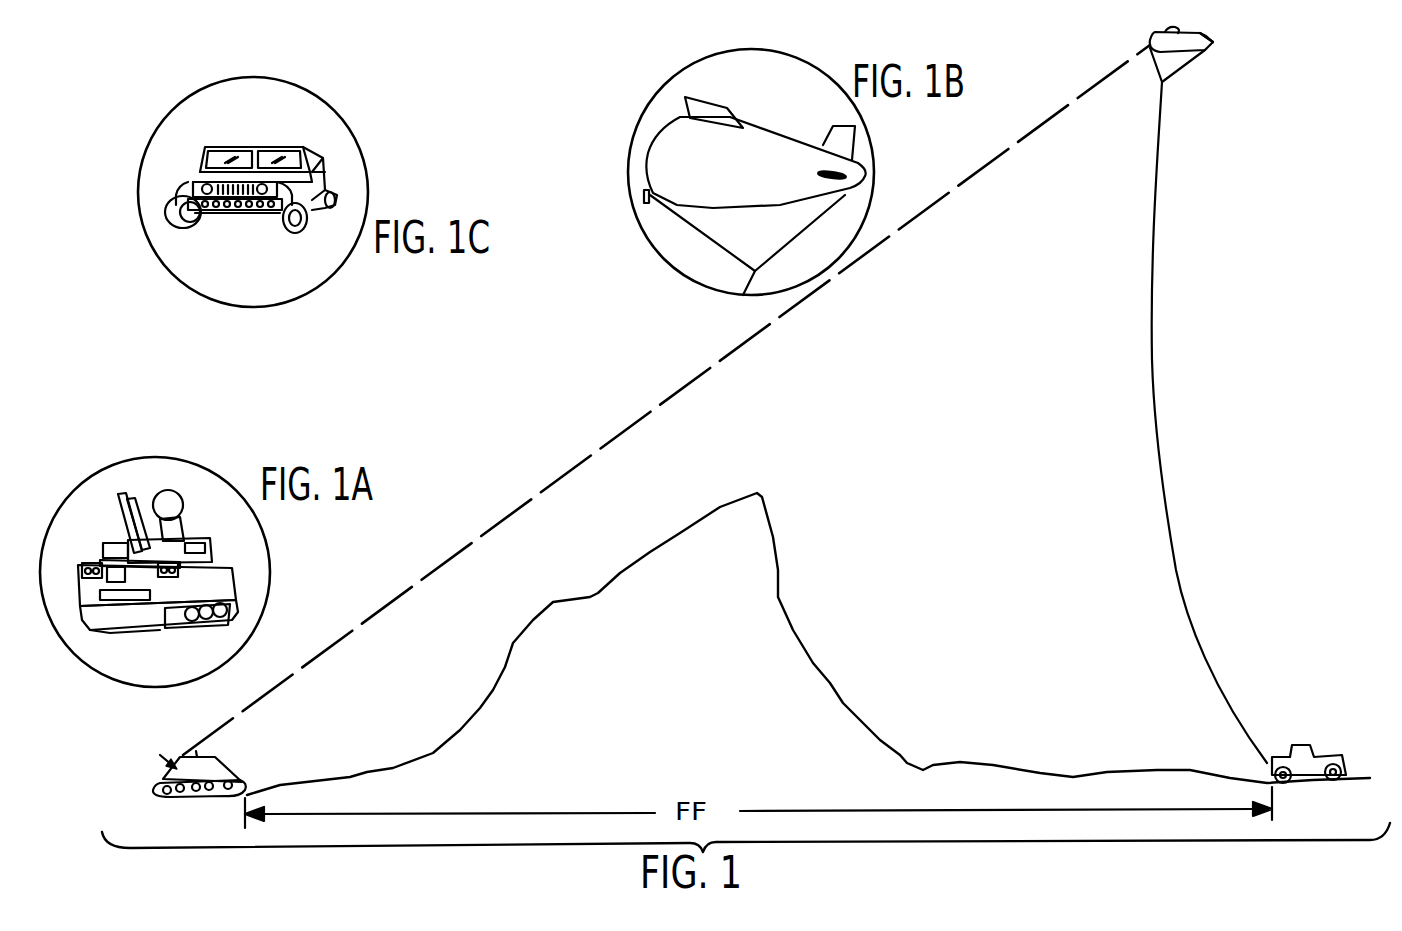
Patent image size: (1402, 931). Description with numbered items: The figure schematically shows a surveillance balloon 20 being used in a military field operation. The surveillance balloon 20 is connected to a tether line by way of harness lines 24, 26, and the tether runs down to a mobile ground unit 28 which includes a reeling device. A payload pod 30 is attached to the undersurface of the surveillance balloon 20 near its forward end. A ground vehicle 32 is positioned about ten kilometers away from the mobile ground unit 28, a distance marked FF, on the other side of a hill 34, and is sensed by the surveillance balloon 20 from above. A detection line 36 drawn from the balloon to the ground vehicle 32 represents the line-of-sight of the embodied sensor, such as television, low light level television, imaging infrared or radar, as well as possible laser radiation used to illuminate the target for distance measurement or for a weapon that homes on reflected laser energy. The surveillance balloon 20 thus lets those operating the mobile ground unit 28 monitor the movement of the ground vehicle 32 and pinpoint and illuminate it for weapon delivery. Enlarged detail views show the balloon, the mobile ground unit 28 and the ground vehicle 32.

In FIG. 1, the surveillance balloon 20 is at (1213, 50).
In FIG. 1B, the surveillance balloon 20 is at (803, 152).
In FIG. 1, the harness line 24 is at (1150, 63).
In FIG. 1B, the harness line 24 is at (718, 242).
In FIG. 1, the harness line 26 is at (1185, 65).
In FIG. 1B, the harness line 26 is at (817, 222).
In FIG. 1, the mobile ground unit 28 is at (1335, 712).
In FIG. 1C, the mobile ground unit 28 is at (262, 208).
In FIG. 1B, the payload pod 30 is at (645, 192).
In FIG. 1, the ground vehicle 32 is at (215, 770).
In FIG. 1A, the ground vehicle 32 is at (233, 584).
In FIG. 1, the hill 34 is at (713, 601).
In FIG. 1, the detection line 36 is at (655, 408).